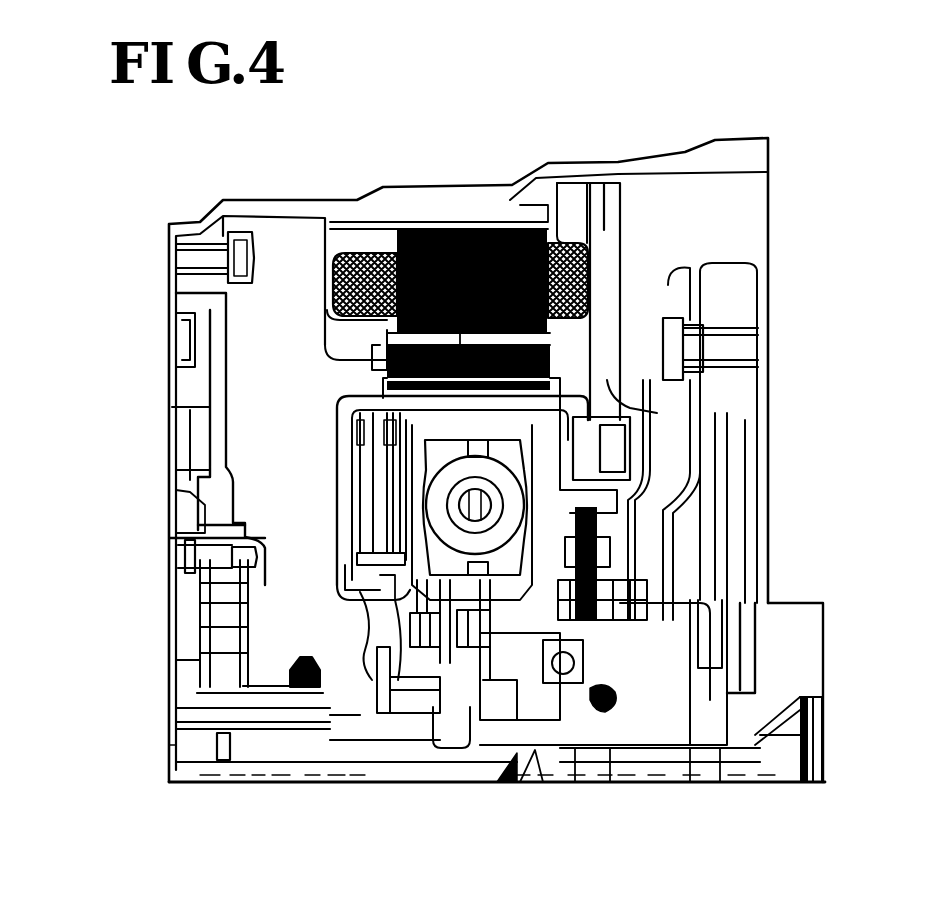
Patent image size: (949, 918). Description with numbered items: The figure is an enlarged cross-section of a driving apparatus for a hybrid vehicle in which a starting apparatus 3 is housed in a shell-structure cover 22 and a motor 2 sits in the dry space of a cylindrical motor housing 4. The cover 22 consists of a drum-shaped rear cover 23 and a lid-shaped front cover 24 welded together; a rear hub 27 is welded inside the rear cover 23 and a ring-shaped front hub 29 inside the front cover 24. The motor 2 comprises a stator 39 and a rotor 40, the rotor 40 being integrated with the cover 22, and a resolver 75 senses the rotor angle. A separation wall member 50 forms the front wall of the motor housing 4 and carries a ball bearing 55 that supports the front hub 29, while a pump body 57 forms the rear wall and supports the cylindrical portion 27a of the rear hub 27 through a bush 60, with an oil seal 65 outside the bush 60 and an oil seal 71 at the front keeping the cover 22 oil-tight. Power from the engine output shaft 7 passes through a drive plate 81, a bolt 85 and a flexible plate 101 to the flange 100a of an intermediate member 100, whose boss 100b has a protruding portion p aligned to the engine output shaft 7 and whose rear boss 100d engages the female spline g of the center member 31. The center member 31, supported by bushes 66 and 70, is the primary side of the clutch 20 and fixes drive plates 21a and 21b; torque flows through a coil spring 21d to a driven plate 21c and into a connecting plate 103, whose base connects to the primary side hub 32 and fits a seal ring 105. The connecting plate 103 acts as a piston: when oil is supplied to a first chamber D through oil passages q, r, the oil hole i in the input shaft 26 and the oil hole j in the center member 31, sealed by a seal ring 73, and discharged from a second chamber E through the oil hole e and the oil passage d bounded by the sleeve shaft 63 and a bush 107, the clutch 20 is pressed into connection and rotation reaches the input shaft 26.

The motor 2 is at (483, 186).
The starting apparatus 3 is at (294, 399).
The motor housing 4 is at (331, 206).
The engine output shaft 7 is at (808, 650).
The clutch 20 is at (347, 392).
The drive plate 21a is at (393, 533).
The drive plate 21b is at (520, 580).
The driven plate 21c is at (490, 444).
The coil spring 21d is at (520, 490).
The cover 22 is at (340, 392).
The rear cover 23 is at (330, 405).
The front cover 24 is at (660, 536).
The input shaft 26 is at (312, 776).
The rear hub 27 is at (388, 776).
The cylindrical portion 27a is at (336, 776).
The front hub 29 is at (600, 702).
The center member 31 is at (545, 776).
The hub 32 is at (365, 592).
The stator 39 is at (444, 226).
The rotor 40 is at (547, 226).
The separation wall member 50 is at (604, 214).
The ball bearing 55 is at (578, 665).
The pump body 57 is at (265, 632).
The bush 60 is at (195, 668).
The sleeve shaft 63 is at (210, 776).
The oil seal 65 is at (323, 670).
The bush 66 is at (462, 776).
The bush 70 is at (575, 776).
The oil seal 71 is at (655, 776).
The seal ring 73 is at (505, 776).
The resolver 75 is at (655, 554).
The drive plate 81 is at (743, 394).
The bolt 85 is at (668, 316).
The intermediate member 100 is at (690, 776).
The flange 100a is at (820, 733).
The boss 100b is at (735, 776).
The rear boss 100d is at (625, 776).
The flexible plate 101 is at (630, 490).
The connecting plate 103 is at (400, 488).
The seal ring 105 is at (425, 776).
The bush 107 is at (280, 776).
The first chamber D is at (680, 601).
The second chamber E is at (390, 564).
The oil passage d is at (238, 776).
The oil hole e is at (355, 776).
The female spline g is at (605, 776).
The oil hole i is at (258, 776).
The oil hole j is at (523, 776).
The protruding portion p is at (765, 776).
The oil passage q is at (168, 745).
The oil passage r is at (183, 779).